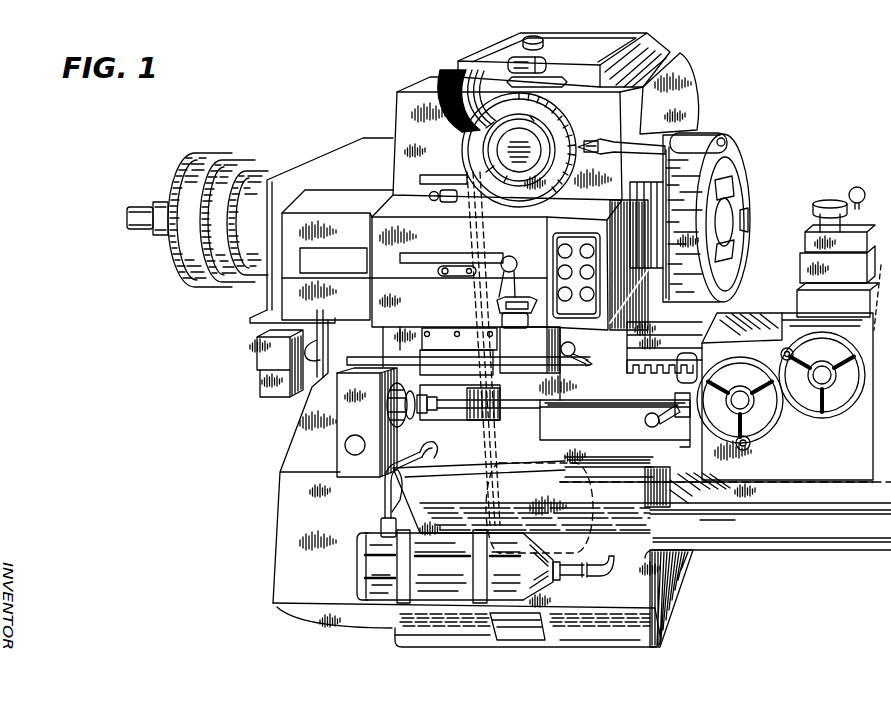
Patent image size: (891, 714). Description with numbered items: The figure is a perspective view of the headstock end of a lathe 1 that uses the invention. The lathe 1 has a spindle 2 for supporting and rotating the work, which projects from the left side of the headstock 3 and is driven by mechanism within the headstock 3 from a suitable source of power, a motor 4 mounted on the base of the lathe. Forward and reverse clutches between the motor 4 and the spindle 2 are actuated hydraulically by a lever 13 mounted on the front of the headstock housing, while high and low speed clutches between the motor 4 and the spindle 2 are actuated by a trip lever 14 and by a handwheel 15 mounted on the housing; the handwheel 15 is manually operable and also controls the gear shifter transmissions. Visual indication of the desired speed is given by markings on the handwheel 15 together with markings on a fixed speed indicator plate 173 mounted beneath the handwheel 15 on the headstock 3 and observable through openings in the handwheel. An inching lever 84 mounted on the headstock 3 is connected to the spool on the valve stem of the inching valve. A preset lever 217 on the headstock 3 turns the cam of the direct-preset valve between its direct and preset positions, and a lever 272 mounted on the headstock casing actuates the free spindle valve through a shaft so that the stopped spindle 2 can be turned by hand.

The lathe 1 is at (334, 77).
The spindle 2 is at (166, 202).
The headstock 3 is at (680, 53).
The motor 4 is at (594, 521).
The lever 13 is at (522, 272).
The trip lever 14 is at (580, 157).
The handwheel 15 is at (462, 154).
The inching lever 84 is at (432, 197).
The speed indicator plate 173 is at (552, 97).
The preset lever 217 is at (533, 58).
The lever 272 is at (453, 276).